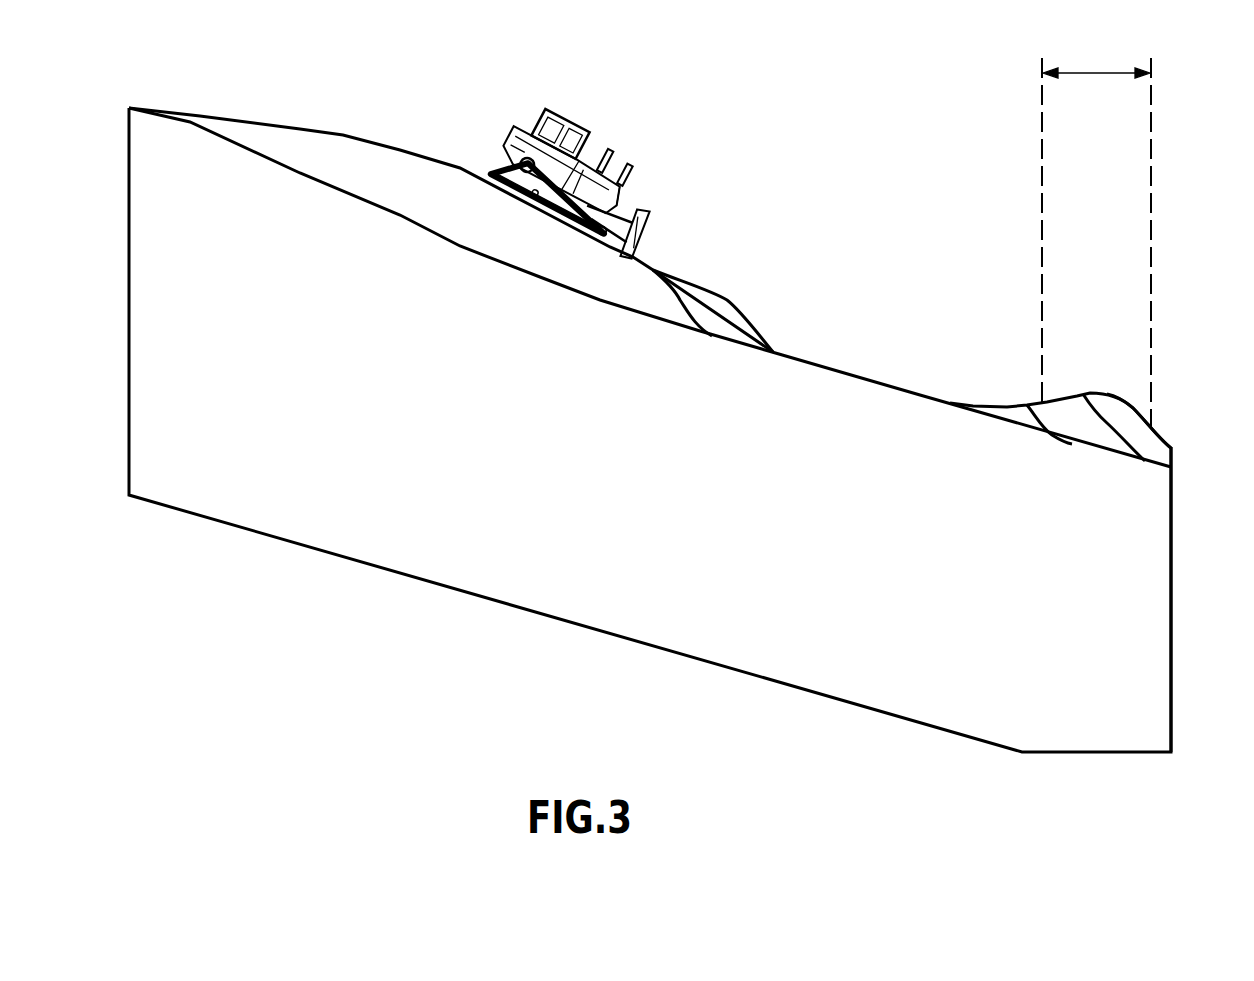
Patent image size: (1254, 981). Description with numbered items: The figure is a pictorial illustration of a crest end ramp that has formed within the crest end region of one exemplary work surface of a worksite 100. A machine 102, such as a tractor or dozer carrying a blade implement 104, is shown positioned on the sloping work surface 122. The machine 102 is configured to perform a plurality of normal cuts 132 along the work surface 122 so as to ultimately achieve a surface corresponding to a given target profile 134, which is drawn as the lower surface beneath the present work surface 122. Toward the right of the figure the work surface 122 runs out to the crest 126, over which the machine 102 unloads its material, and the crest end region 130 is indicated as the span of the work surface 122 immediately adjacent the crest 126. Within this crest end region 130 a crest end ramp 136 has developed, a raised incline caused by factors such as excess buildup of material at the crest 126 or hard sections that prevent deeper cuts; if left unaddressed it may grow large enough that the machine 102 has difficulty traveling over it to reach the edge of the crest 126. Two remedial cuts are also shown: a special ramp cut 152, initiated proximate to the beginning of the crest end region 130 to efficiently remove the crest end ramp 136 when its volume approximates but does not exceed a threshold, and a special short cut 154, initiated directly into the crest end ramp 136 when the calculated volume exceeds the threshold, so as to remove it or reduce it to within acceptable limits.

The worksite 100 is at (341, 622).
The machine 102 is at (549, 108).
The blade implement 104 is at (645, 216).
The work surface 122 is at (345, 137).
The crest 126 is at (1170, 447).
The crest end region 130 is at (1095, 73).
The normal cut 132 is at (697, 281).
The target profile 134 is at (263, 157).
The crest end ramp 136 is at (1127, 400).
The special ramp cut 152 is at (1027, 405).
The special short cut 154 is at (1080, 394).